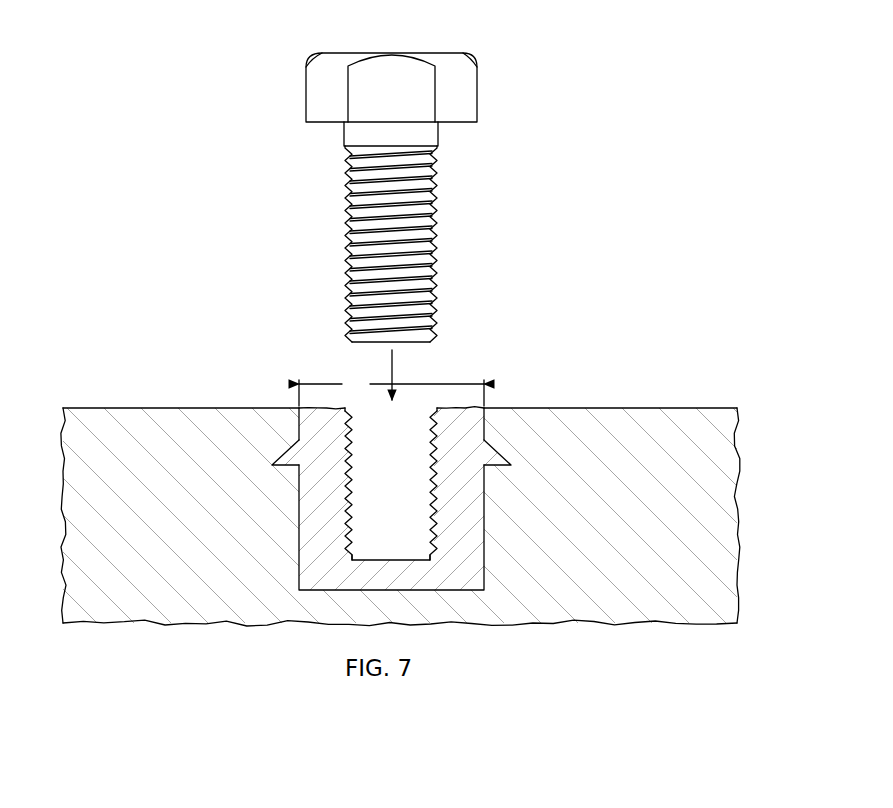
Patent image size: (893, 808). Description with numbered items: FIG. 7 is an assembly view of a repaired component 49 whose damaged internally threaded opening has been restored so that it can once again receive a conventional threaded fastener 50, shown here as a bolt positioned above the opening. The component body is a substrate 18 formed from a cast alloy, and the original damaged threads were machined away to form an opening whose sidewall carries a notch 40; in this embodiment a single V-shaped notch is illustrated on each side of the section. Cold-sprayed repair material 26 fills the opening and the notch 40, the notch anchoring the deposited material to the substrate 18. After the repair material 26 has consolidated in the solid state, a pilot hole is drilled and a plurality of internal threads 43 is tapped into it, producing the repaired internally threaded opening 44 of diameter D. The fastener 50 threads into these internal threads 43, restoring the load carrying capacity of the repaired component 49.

The substrate 18 is at (718, 581).
The repair material 26 is at (470, 562).
The notch 40 is at (271, 465).
The internal threads 43 is at (349, 497).
The repaired internally threaded opening 44 is at (425, 403).
The repaired component 49 is at (446, 350).
The conventional threaded fastener 50 is at (500, 134).